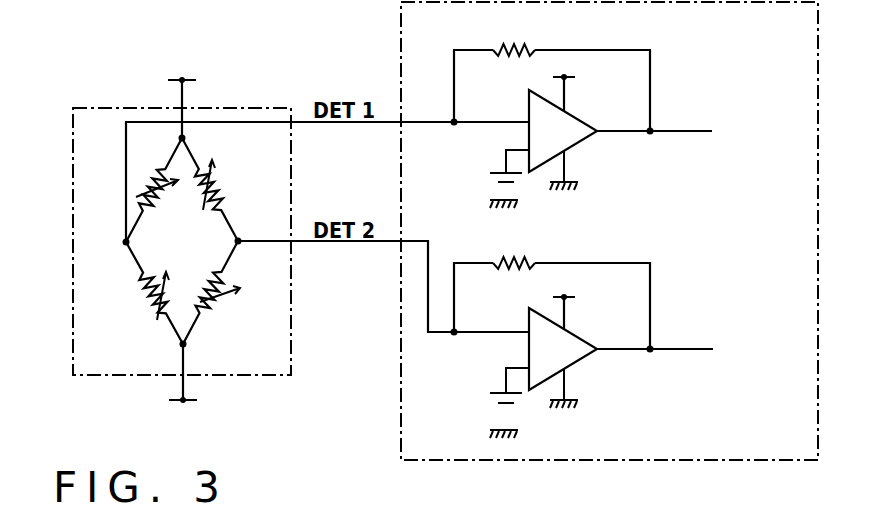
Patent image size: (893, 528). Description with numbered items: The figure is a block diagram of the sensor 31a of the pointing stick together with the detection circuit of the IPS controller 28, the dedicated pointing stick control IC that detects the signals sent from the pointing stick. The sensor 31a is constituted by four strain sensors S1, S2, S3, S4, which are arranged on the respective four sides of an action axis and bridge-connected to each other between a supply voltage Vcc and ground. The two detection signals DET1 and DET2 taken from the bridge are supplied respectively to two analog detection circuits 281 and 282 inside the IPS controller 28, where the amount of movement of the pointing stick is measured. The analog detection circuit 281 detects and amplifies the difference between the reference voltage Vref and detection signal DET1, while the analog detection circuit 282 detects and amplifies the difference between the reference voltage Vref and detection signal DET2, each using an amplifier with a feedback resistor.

The sensor 31a is at (232, 108).
The IPS controller 28 is at (400, 361).
The analog detection circuit 281 is at (590, 147).
The analog detection circuit 282 is at (590, 365).
The strain sensor S1 is at (154, 190).
The strain sensor S2 is at (226, 163).
The strain sensor S3 is at (148, 300).
The strain sensor S4 is at (216, 310).